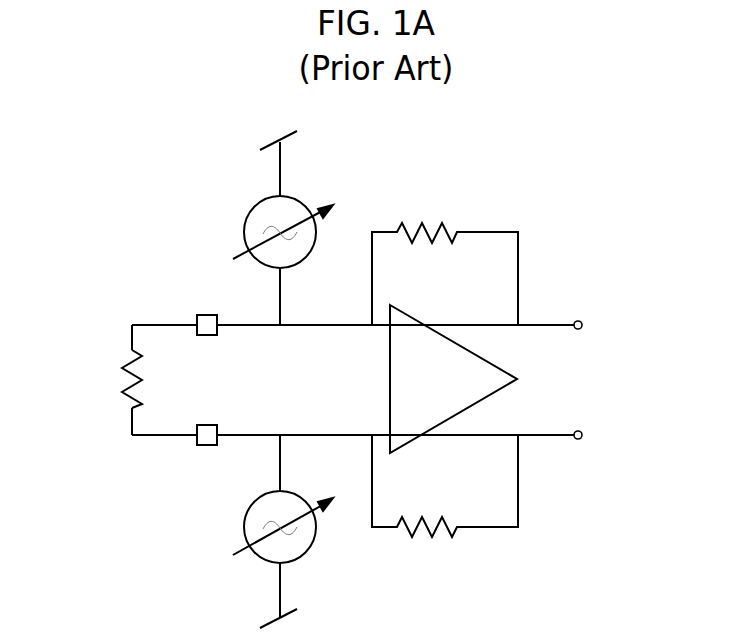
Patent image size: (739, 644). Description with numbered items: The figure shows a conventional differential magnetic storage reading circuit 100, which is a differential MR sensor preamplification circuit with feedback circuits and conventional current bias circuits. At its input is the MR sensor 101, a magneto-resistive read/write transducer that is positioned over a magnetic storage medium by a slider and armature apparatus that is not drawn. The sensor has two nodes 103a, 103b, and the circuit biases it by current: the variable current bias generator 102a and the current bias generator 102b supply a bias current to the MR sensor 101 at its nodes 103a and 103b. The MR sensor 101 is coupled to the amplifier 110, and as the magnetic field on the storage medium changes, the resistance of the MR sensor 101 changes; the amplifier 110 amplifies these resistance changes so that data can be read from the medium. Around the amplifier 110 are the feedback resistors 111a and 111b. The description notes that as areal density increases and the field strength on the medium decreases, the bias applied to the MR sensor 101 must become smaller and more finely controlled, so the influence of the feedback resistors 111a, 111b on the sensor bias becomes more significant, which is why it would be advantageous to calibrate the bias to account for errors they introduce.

The differential magnetic storage reading circuit 100 is at (511, 128).
The MR sensor 101 is at (115, 367).
The variable current bias generator 102a is at (301, 197).
The current bias generator 102b is at (305, 563).
The node 103a is at (207, 337).
The node 103b is at (207, 424).
The amplifier 110 is at (505, 372).
The feedback resistor 111a is at (450, 226).
The feedback resistor 111b is at (455, 540).